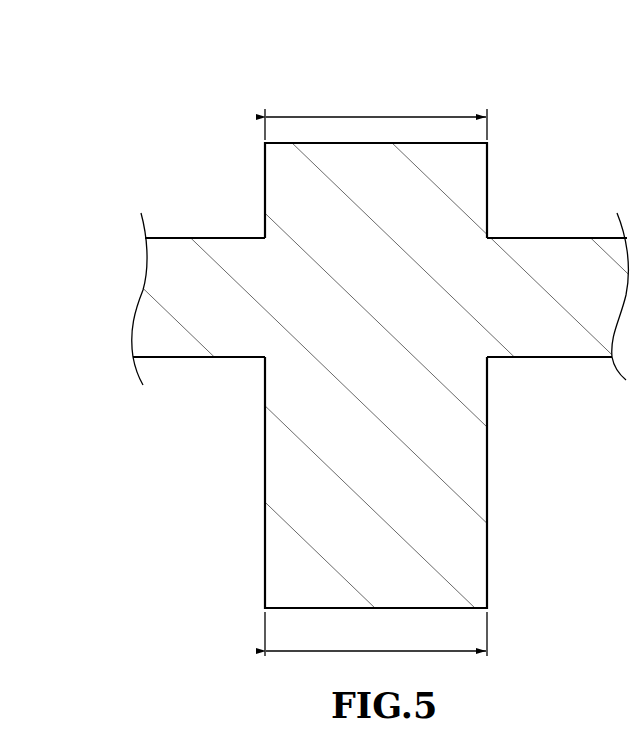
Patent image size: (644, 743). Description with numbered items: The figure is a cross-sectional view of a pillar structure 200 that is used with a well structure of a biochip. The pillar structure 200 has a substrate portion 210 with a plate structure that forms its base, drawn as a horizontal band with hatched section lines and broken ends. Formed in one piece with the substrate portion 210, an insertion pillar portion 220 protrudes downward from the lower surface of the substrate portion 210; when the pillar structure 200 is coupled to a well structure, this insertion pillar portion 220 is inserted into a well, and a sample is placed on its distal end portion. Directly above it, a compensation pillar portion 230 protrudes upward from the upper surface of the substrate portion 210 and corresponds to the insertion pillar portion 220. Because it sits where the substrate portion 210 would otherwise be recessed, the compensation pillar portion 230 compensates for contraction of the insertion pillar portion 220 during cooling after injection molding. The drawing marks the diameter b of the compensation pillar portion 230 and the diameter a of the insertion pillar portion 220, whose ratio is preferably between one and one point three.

The pillar structure 200 is at (245, 68).
The substrate portion 210 is at (586, 245).
The insertion pillar portion 220 is at (487, 476).
The compensation pillar portion 230 is at (487, 151).